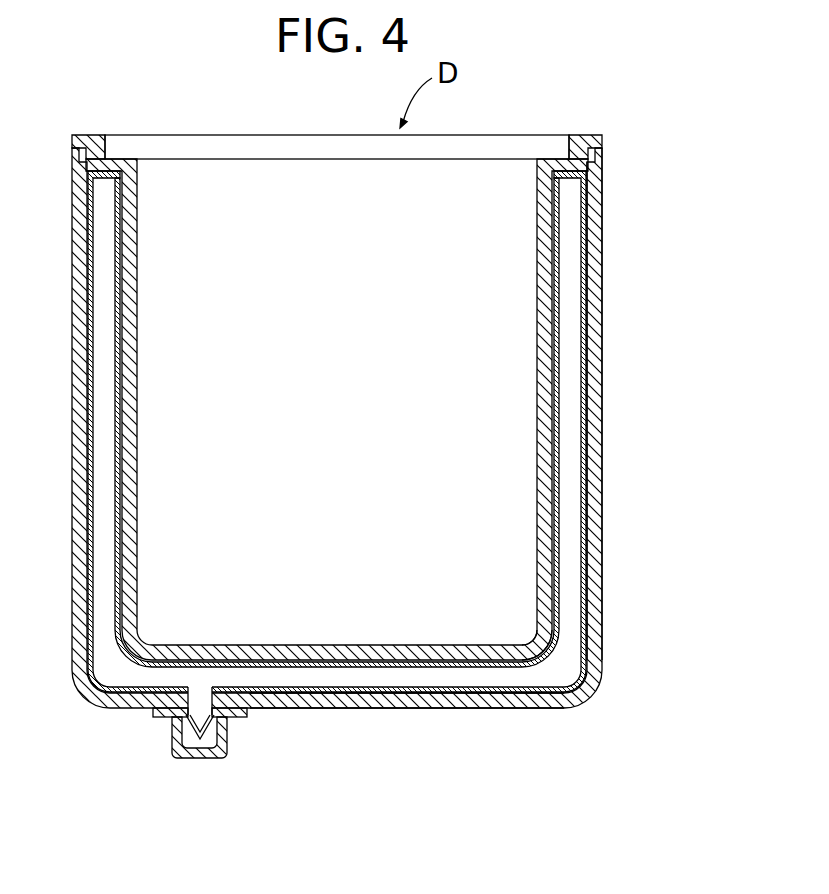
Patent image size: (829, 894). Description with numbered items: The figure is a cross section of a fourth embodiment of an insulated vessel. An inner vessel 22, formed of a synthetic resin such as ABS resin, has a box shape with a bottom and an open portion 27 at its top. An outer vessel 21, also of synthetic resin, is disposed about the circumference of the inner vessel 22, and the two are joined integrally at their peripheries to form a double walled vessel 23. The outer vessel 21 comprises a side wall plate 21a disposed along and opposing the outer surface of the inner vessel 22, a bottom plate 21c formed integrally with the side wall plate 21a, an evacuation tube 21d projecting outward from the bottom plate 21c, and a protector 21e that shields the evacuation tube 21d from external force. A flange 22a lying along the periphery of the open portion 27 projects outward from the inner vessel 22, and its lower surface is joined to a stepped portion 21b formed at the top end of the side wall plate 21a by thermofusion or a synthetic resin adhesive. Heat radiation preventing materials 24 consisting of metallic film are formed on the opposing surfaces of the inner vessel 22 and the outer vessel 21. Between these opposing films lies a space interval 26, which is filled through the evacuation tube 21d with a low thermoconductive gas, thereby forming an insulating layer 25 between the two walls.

The outer vessel 21 is at (612, 298).
The side wall plate 21a is at (597, 520).
The stepped portion 21b is at (601, 168).
The bottom plate 21c is at (545, 700).
The evacuation tube 21d is at (228, 742).
The protector 21e is at (172, 742).
The inner vessel 22 is at (553, 377).
The flange 22a is at (93, 135).
The double walled vessel 23 is at (668, 235).
The heat radiation preventing material 24 is at (555, 448).
The insulating layer 25 is at (567, 643).
The space interval 26 is at (441, 677).
The open portion 27 is at (507, 135).